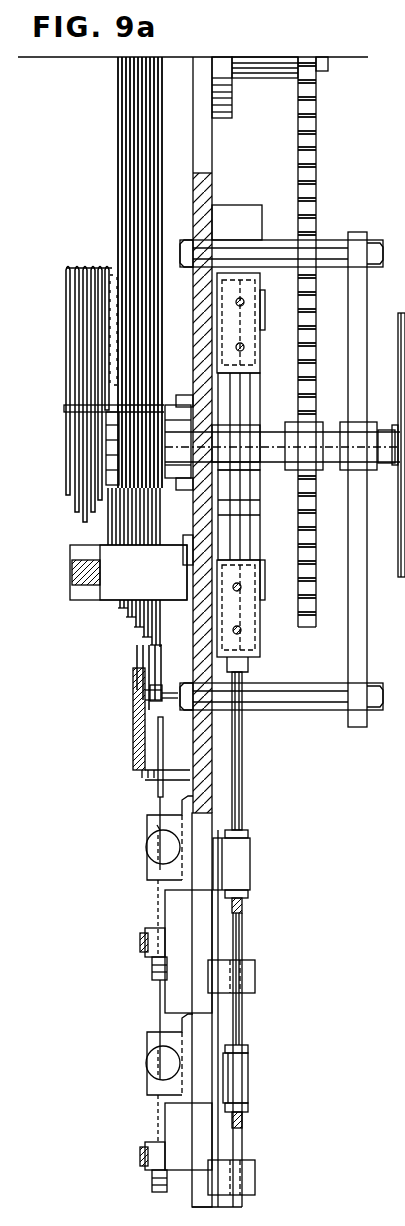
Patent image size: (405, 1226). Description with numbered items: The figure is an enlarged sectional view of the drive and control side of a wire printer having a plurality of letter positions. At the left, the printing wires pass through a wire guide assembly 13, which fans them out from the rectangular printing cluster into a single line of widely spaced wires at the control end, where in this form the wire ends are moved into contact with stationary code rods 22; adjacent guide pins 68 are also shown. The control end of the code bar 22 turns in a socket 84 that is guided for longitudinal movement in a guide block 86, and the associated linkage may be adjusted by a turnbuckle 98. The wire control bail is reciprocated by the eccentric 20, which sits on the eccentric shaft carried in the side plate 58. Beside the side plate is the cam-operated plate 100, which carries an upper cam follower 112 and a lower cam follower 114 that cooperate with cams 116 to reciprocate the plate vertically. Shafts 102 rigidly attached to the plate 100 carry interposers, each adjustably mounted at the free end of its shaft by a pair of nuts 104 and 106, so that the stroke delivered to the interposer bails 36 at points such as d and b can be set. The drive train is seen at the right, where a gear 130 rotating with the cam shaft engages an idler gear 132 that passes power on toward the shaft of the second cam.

The wire guide assembly 13 is at (118, 135).
The side plate 58 is at (208, 153).
The idler gear 132 is at (311, 138).
The gear 130 is at (314, 548).
The comb pins 68 is at (67, 267).
The code bar 22 is at (80, 410).
The eccentric 20 is at (115, 430).
The upper cam follower 112 is at (258, 374).
The cam 116 is at (245, 410).
The cam-operated plate 100 is at (260, 480).
The lower cam follower 114 is at (245, 522).
The socket 84 is at (137, 645).
The guide block 86 is at (134, 738).
The turnbuckle 98 is at (153, 783).
The shaft 102 is at (243, 806).
The interposer bail 36 is at (152, 888).
The nut 104 is at (246, 1046).
The nut 106 is at (246, 1108).
The pivot point d is at (148, 847).
The pivot point b is at (148, 1063).